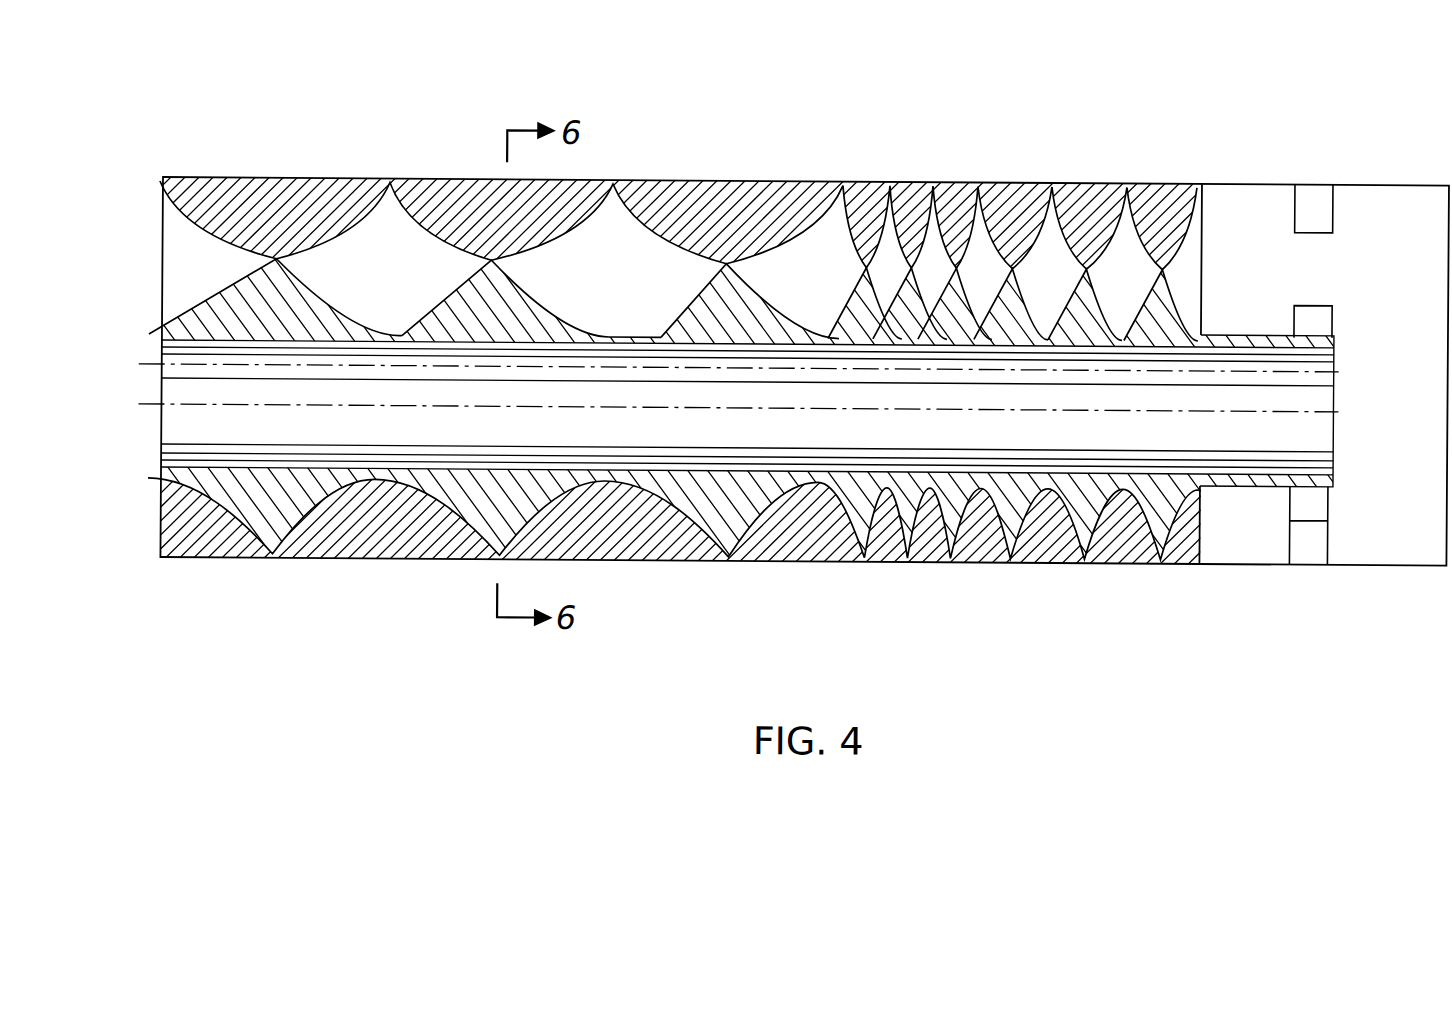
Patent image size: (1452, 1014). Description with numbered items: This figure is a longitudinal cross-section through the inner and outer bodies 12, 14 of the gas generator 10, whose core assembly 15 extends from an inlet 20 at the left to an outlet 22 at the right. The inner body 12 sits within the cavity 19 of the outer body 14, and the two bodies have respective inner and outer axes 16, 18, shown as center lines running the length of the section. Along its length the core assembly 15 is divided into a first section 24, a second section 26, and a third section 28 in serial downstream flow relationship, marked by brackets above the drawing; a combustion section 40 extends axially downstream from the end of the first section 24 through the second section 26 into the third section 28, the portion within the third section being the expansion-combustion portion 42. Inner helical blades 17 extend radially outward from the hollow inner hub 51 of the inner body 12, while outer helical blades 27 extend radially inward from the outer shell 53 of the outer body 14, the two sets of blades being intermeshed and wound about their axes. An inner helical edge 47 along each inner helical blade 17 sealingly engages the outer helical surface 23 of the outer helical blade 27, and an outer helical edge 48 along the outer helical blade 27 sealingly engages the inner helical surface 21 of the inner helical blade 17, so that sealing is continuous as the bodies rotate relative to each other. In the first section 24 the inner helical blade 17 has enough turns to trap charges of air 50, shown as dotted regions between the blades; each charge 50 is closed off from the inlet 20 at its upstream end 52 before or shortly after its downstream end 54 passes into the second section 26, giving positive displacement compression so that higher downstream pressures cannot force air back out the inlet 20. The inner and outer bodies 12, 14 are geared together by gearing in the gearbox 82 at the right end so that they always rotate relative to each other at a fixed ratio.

The gas generator 10 is at (172, 606).
The inner body 12 is at (280, 546).
The outer body 14 is at (268, 178).
The core assembly 15 is at (163, 228).
The inner axis 16 is at (1268, 406).
The inner helical blade 17 is at (486, 266).
The outer axis 18 is at (1270, 350).
The cavity 19 is at (392, 186).
The inlet 20 is at (163, 286).
The inner helical surface 21 is at (450, 300).
The outlet 22 is at (1205, 236).
The outer helical surface 23 is at (625, 220).
The first section 24 is at (163, 66).
The second section 26 is at (976, 70).
The outer helical blade 27 is at (222, 185).
The third section 28 is at (1203, 70).
The combustion section 40 is at (1088, 633).
The expansion-combustion portion 42 is at (1088, 564).
The inner helical edge 47 is at (337, 262).
The outer helical edge 48 is at (808, 251).
The charge of air 50 is at (380, 302).
The hollow inner hub 51 is at (163, 330).
The upstream end 52 is at (290, 258).
The outer shell 53 is at (163, 177).
The downstream end 54 is at (705, 262).
The gearbox 82 is at (1305, 557).